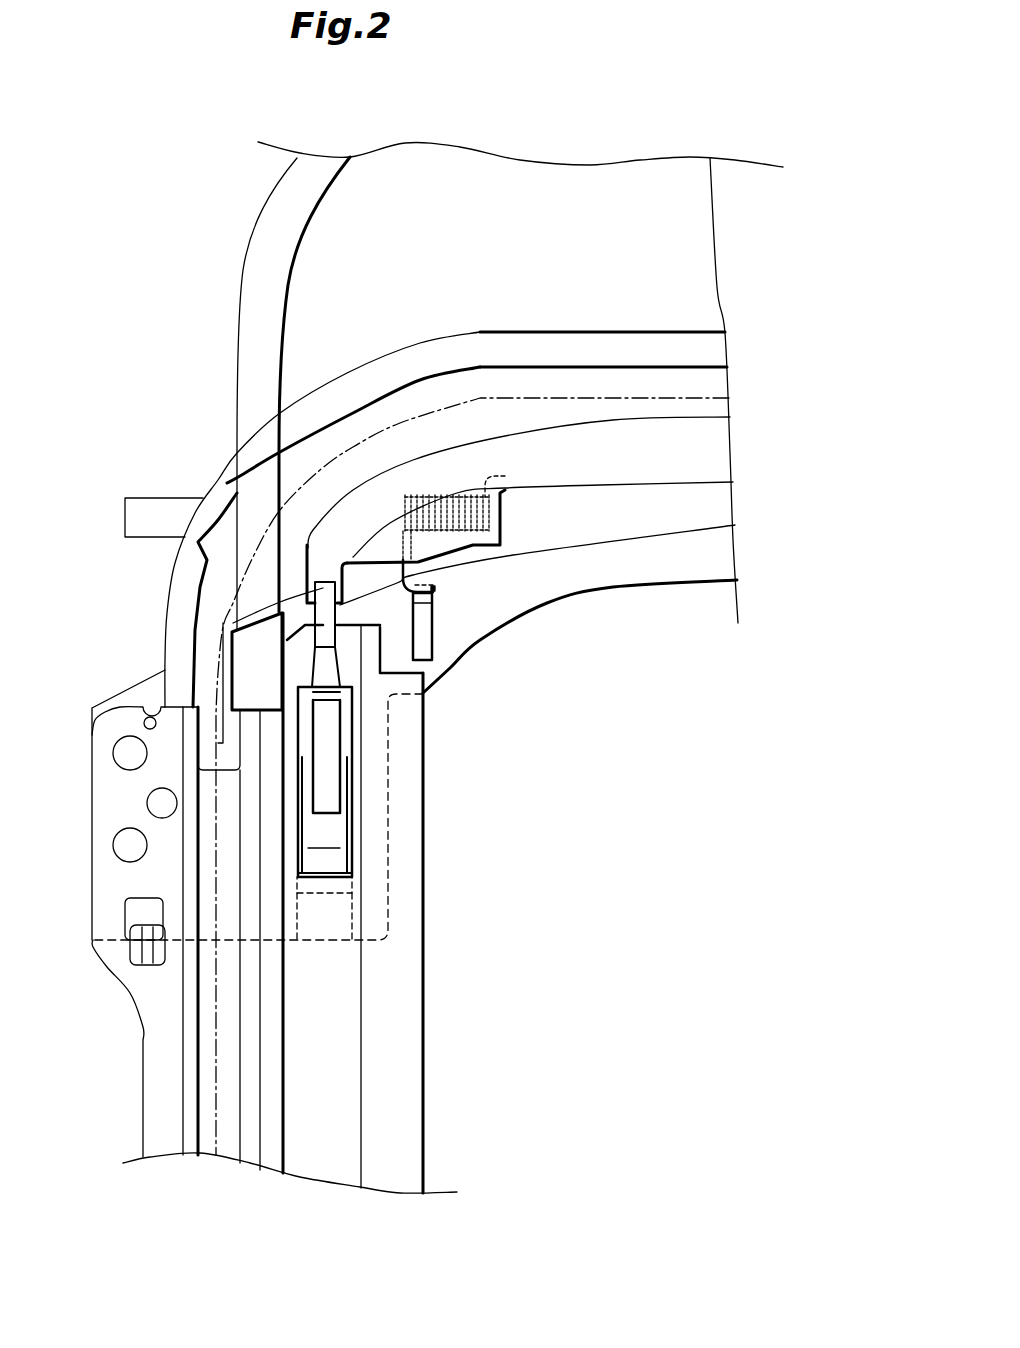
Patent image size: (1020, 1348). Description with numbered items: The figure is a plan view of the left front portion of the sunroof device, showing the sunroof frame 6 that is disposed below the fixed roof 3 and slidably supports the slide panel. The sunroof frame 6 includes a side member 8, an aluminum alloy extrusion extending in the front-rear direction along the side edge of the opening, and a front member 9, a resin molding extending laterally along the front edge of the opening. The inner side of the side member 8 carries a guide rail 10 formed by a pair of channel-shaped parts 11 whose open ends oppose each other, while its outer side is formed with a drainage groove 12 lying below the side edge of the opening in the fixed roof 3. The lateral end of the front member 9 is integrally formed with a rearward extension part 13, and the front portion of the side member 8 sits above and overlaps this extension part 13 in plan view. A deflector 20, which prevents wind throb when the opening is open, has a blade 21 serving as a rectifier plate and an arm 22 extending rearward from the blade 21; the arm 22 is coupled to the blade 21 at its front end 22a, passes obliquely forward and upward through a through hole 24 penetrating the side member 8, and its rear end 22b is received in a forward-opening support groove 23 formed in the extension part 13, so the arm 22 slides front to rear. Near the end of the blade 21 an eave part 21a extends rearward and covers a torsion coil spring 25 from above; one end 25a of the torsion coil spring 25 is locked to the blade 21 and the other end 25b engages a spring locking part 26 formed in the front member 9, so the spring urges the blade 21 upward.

The fixed roof 3 is at (383, 427).
The sunroof frame 6 is at (228, 398).
The side member 8 is at (412, 1113).
The front member 9 is at (668, 577).
The guide rail 10 is at (318, 1152).
The channel-shaped part 11 is at (273, 1157).
The drainage groove 12 is at (200, 1137).
The extension part 13 is at (388, 788).
The deflector 20 is at (643, 408).
The blade 21 is at (605, 437).
The eave part 21a is at (490, 540).
The arm 22 is at (337, 730).
The front end 22a is at (327, 590).
The rear end 22b is at (323, 895).
The support groove 23 is at (307, 920).
The through hole 24 is at (323, 873).
The torsion coil spring 25 is at (455, 495).
The one end 25a is at (496, 474).
The other end 25b is at (435, 590).
The spring locking part 26 is at (425, 647).